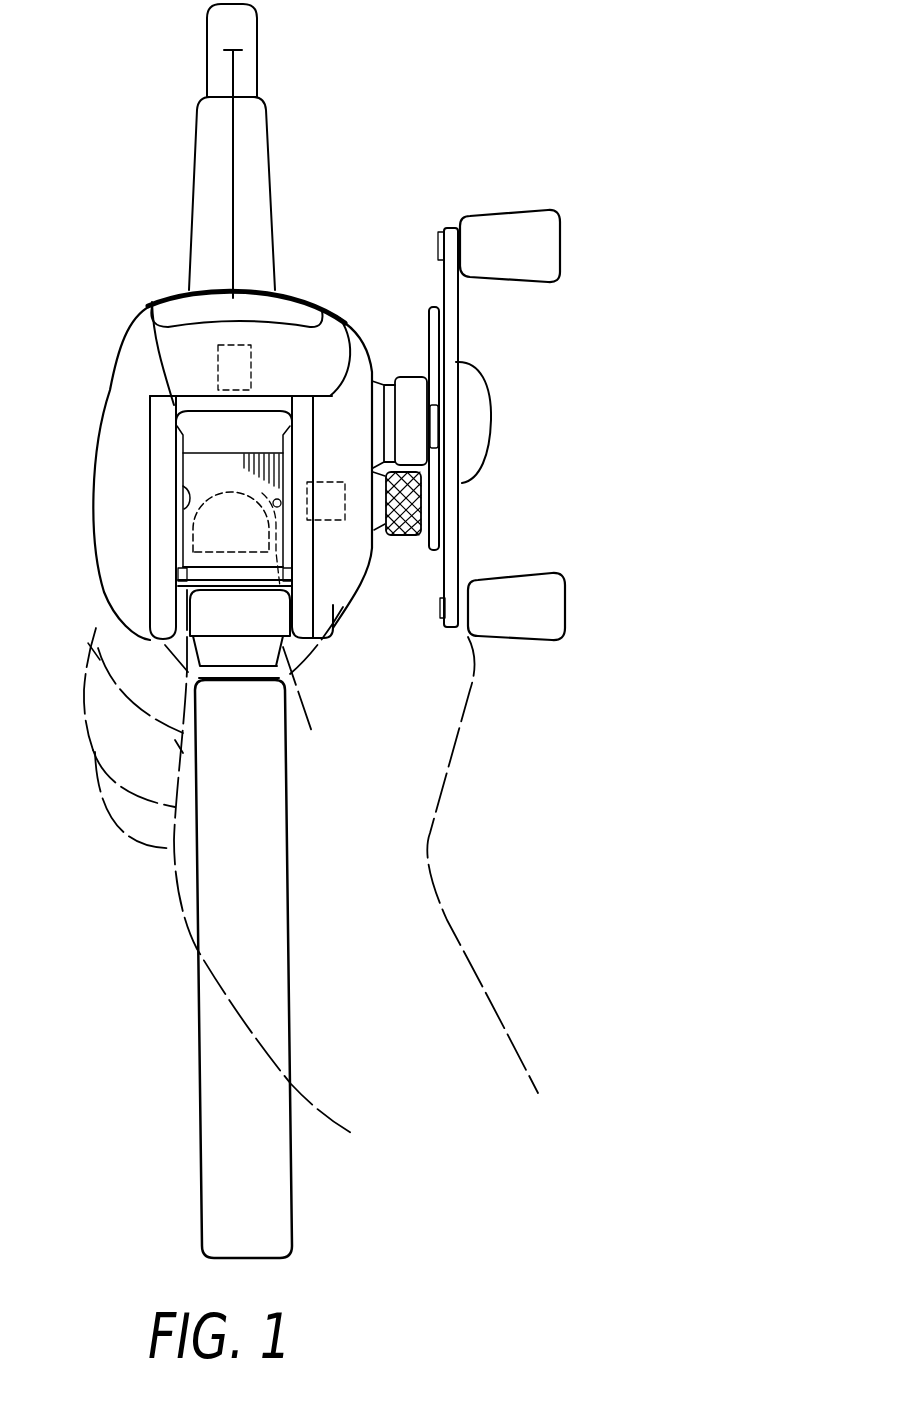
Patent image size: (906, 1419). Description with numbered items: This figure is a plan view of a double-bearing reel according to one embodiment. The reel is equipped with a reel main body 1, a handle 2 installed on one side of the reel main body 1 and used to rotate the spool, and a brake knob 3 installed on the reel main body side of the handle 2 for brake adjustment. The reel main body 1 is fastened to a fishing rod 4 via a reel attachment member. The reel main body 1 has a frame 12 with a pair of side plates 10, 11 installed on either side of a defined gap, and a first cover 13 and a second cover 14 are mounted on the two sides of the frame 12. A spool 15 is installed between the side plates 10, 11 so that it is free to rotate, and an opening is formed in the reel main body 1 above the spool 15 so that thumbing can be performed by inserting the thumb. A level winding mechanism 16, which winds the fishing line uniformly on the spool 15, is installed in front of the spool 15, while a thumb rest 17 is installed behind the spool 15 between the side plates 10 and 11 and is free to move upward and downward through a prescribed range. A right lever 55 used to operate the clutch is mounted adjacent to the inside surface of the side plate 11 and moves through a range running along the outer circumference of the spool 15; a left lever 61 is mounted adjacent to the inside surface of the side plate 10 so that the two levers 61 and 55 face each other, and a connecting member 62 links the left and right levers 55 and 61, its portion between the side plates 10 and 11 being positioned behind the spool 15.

The reel main body 1 is at (119, 329).
The handle 2 is at (450, 322).
The brake knob 3 is at (432, 305).
The fishing rod 4 is at (253, 868).
The side plate 10 is at (164, 430).
The side plate 11 is at (300, 410).
The frame 12 is at (150, 300).
The first cover 13 is at (113, 520).
The second cover 14 is at (330, 585).
The spool 15 is at (180, 462).
The level winding mechanism 16 is at (253, 349).
The thumb rest 17 is at (228, 605).
The right lever 55 is at (273, 501).
The left lever 61 is at (182, 505).
The connecting member 62 is at (186, 588).